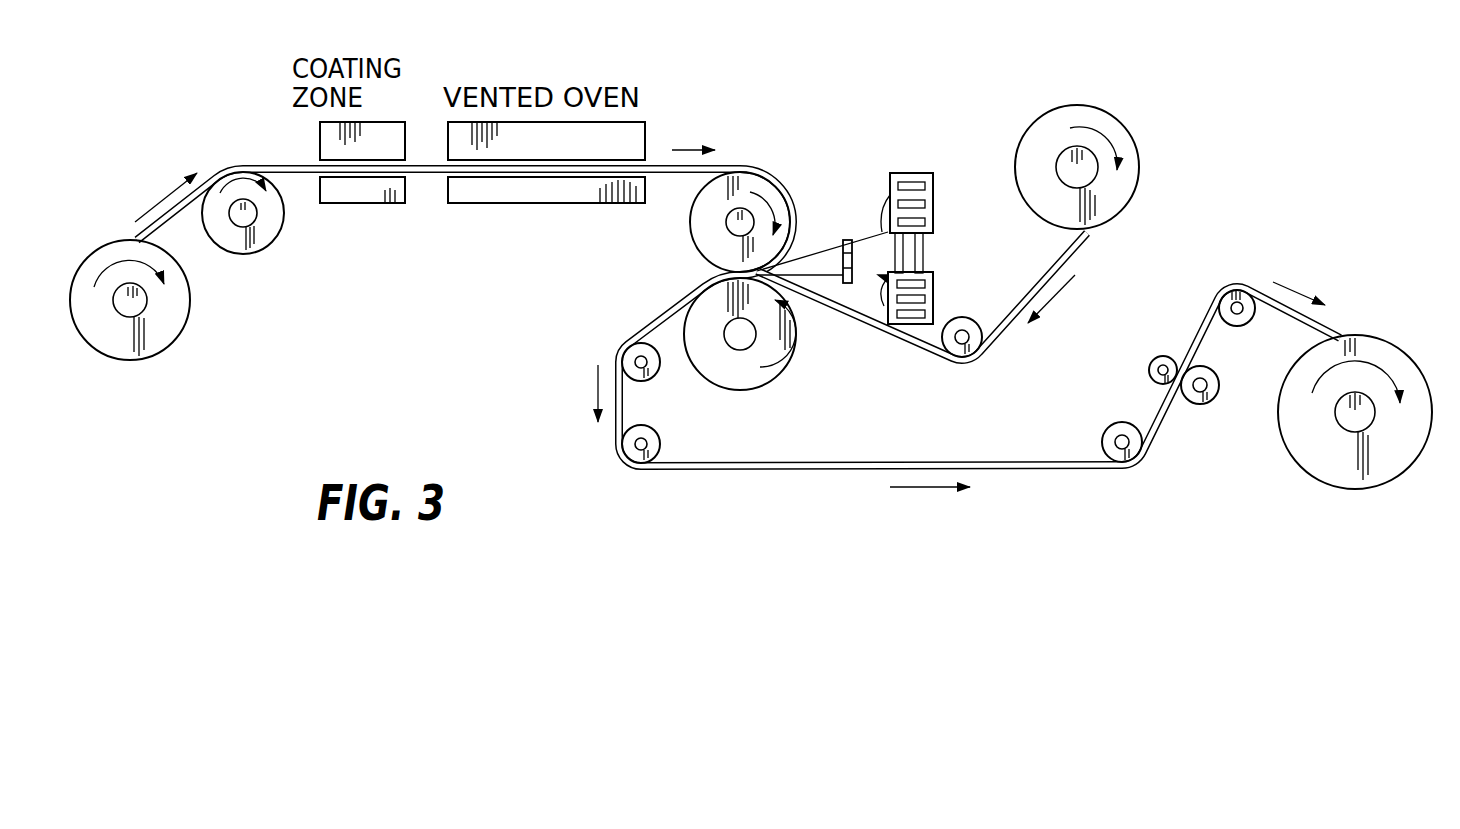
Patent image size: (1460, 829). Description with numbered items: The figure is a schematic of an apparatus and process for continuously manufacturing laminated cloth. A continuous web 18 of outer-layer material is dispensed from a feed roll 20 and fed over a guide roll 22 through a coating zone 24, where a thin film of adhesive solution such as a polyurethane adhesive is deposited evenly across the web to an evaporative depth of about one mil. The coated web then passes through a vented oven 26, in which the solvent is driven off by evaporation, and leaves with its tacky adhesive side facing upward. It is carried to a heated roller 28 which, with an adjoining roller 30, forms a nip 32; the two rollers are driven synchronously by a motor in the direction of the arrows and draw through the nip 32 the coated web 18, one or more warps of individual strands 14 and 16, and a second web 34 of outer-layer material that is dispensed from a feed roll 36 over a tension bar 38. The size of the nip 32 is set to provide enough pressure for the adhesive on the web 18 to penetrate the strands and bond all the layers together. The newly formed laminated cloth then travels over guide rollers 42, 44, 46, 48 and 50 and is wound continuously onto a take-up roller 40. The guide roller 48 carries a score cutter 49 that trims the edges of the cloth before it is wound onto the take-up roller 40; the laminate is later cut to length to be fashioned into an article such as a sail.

The warp of individual strands 14 is at (820, 252).
The warp of individual strands 16 is at (822, 280).
The continuous web 18 is at (285, 158).
The feed roll 20 is at (172, 312).
The guide roll 22 is at (254, 230).
The coating zone 24 is at (385, 204).
The vented oven 26 is at (515, 204).
The heated roller 28 is at (690, 238).
The adjoining roller 30 is at (746, 377).
The nip 32 is at (706, 271).
The second web 34 is at (1024, 288).
The feed roll 36 is at (1113, 208).
The tension bar 38 is at (966, 318).
The take-up roller 40 is at (1386, 360).
The guide roller 42 is at (653, 375).
The guide roller 44 is at (661, 443).
The guide roller 46 is at (1112, 433).
The guide roller 48 is at (1201, 404).
The score cutter 49 is at (1150, 362).
The guide roller 50 is at (1240, 327).